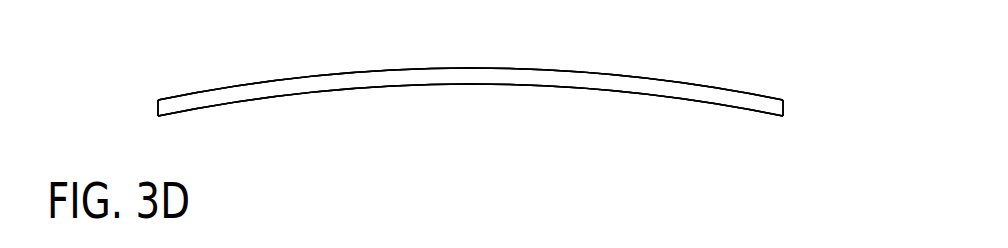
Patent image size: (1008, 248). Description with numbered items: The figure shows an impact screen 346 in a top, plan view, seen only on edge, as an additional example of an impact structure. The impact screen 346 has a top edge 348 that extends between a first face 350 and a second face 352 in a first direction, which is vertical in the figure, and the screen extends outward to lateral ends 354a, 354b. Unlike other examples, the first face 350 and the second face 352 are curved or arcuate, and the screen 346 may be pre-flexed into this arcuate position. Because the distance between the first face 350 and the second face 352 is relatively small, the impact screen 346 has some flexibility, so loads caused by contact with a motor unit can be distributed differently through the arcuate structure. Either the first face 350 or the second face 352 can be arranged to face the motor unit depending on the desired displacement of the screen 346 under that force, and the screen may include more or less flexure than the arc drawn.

The impact screen 346 is at (228, 57).
The top edge 348 is at (373, 78).
The first face 350 is at (497, 85).
The second face 352 is at (519, 69).
The lateral end 354a is at (157, 110).
The lateral end 354b is at (785, 110).